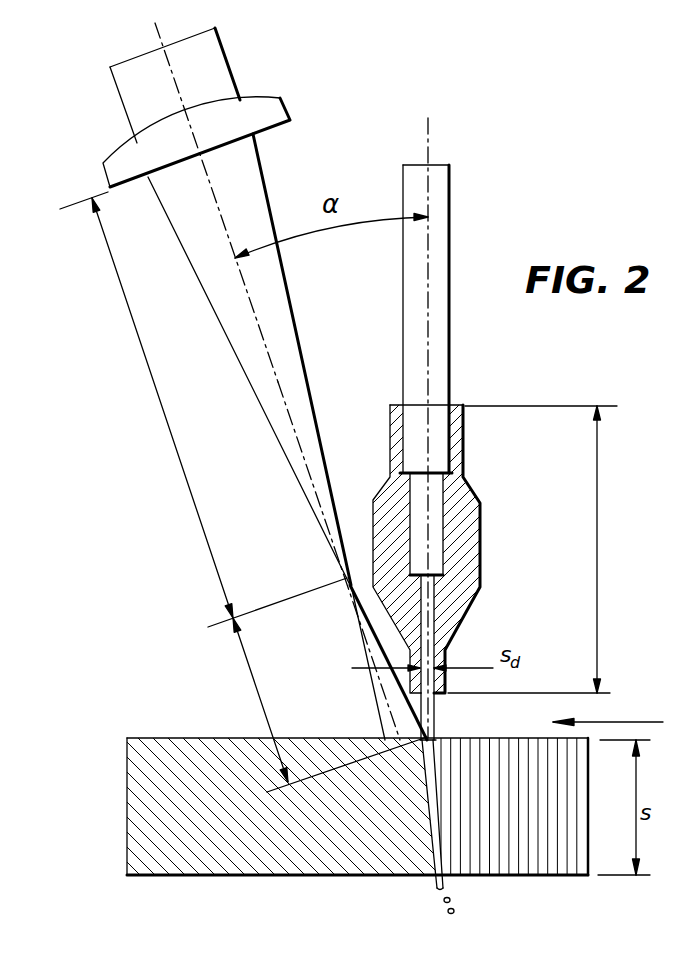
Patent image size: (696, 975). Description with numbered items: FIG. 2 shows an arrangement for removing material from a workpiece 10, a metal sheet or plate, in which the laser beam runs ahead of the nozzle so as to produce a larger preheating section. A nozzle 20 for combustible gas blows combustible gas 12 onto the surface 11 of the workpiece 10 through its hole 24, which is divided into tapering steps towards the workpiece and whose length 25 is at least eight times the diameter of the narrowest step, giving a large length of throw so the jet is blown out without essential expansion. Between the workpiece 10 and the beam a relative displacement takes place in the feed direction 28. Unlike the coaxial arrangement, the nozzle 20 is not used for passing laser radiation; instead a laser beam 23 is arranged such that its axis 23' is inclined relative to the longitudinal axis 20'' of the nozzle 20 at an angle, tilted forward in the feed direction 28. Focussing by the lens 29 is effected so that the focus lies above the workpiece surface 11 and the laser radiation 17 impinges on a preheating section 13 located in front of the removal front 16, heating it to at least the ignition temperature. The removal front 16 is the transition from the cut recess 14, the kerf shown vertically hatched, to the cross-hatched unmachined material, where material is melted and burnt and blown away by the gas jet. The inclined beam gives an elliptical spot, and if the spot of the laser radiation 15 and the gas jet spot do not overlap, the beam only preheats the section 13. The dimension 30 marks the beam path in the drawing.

The workpiece 10 is at (143, 842).
The surface of the workpiece 11 is at (445, 731).
The combustible gas 12 is at (448, 342).
The preheating section 13 is at (420, 742).
The cut recess 14 is at (445, 827).
The laser radiation 15 is at (234, 81).
The removal front 16 is at (424, 781).
The laser radiation 17 is at (296, 466).
The nozzle for combustible gas 20 is at (446, 549).
The longitudinal axis of the nozzle 20'' is at (463, 428).
The laser beam 23 is at (287, 437).
The axis of the laser beam 23' is at (190, 202).
The hole of the nozzle 24 is at (432, 619).
The length of the hole 25 is at (598, 578).
The relative feed direction 28 is at (640, 722).
The lens 29 is at (287, 116).
The focal distance dimension 30 is at (145, 366).